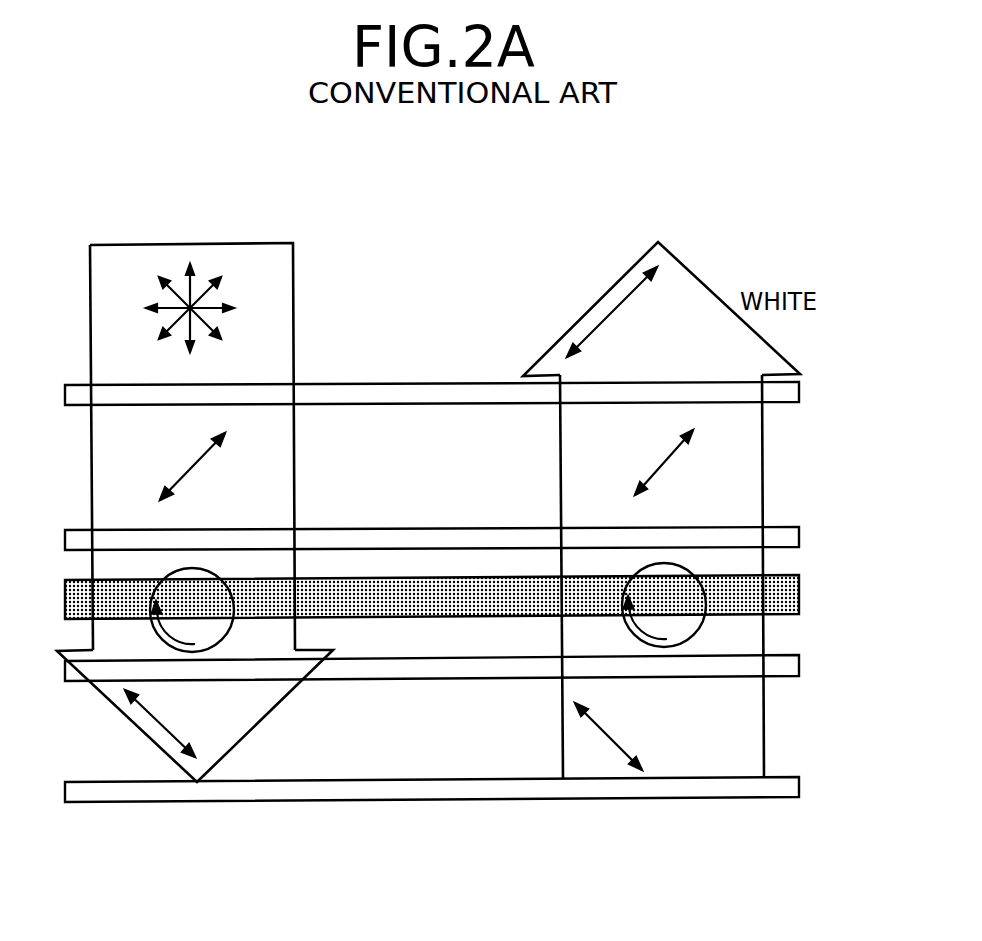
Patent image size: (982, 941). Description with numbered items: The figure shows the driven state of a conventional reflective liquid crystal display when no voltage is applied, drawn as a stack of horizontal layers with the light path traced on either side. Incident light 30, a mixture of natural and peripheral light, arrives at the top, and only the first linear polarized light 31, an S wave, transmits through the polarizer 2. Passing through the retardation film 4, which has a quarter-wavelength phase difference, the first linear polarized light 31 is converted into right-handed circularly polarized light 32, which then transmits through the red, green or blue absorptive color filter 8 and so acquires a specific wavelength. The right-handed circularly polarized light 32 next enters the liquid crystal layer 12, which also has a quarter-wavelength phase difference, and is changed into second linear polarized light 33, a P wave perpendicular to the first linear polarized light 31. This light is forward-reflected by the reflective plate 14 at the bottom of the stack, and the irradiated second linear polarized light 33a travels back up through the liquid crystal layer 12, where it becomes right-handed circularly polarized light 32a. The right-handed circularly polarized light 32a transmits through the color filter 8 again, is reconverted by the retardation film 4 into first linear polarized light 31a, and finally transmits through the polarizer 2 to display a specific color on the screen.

The polarizer 2 is at (787, 392).
The retardation film 4 is at (787, 541).
The color filter 8 is at (787, 600).
The liquid crystal layer 12 is at (785, 670).
The lower polarizer 14 is at (787, 789).
The incident light 30 is at (218, 280).
The first linear polarized light 31 is at (225, 433).
The first linear polarized light 31a is at (693, 430).
The right-handed circularly polarized light 32 is at (210, 570).
The right-handed circularly polarized light 32a is at (697, 574).
The second linear polarized light 33 is at (137, 712).
The irradiated second linear polarized light 33a is at (608, 740).